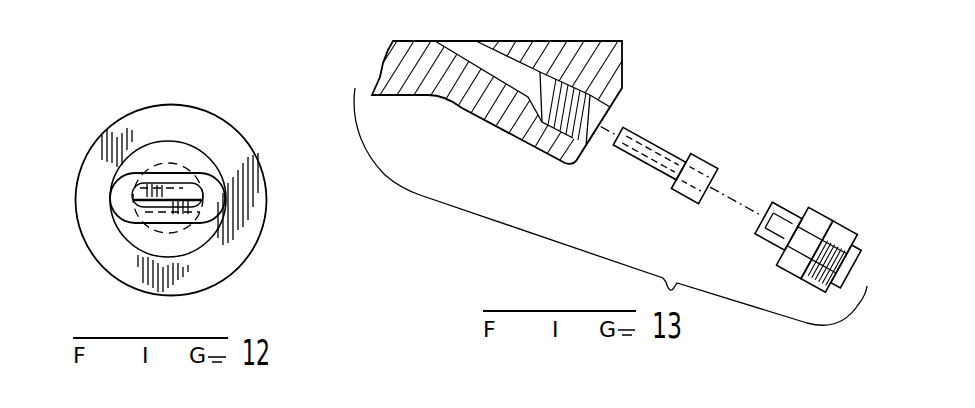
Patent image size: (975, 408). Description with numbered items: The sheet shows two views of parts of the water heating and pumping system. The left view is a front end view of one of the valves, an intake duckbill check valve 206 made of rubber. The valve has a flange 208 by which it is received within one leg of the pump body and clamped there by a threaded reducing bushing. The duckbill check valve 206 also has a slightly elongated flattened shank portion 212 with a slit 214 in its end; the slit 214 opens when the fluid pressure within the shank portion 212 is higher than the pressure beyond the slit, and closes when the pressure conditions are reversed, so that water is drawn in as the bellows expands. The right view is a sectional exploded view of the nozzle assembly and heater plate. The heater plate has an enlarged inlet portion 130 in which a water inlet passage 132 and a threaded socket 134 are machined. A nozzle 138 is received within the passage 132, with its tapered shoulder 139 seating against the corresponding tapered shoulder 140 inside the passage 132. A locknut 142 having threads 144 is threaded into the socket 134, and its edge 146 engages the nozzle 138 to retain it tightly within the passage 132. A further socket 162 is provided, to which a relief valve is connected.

In FIG. 12, the intake duckbill check valve 206 is at (217, 114).
In FIG. 12, the flange 208 is at (157, 113).
In FIG. 12, the shank portion 212 is at (123, 183).
In FIG. 12, the slit 214 is at (185, 190).
In FIG. 13, the inlet portion 130 is at (504, 118).
In FIG. 13, the water inlet passage 132 is at (478, 56).
In FIG. 13, the threaded socket 134 is at (622, 48).
In FIG. 13, the nozzle 138 is at (680, 155).
In FIG. 13, the tapered shoulder 139 is at (692, 162).
In FIG. 13, the tapered shoulder 140 is at (586, 50).
In FIG. 13, the locknut 142 is at (789, 211).
In FIG. 13, the threads 144 is at (800, 206).
In FIG. 13, the edge 146 is at (757, 237).
In FIG. 13, the socket 162 is at (843, 239).